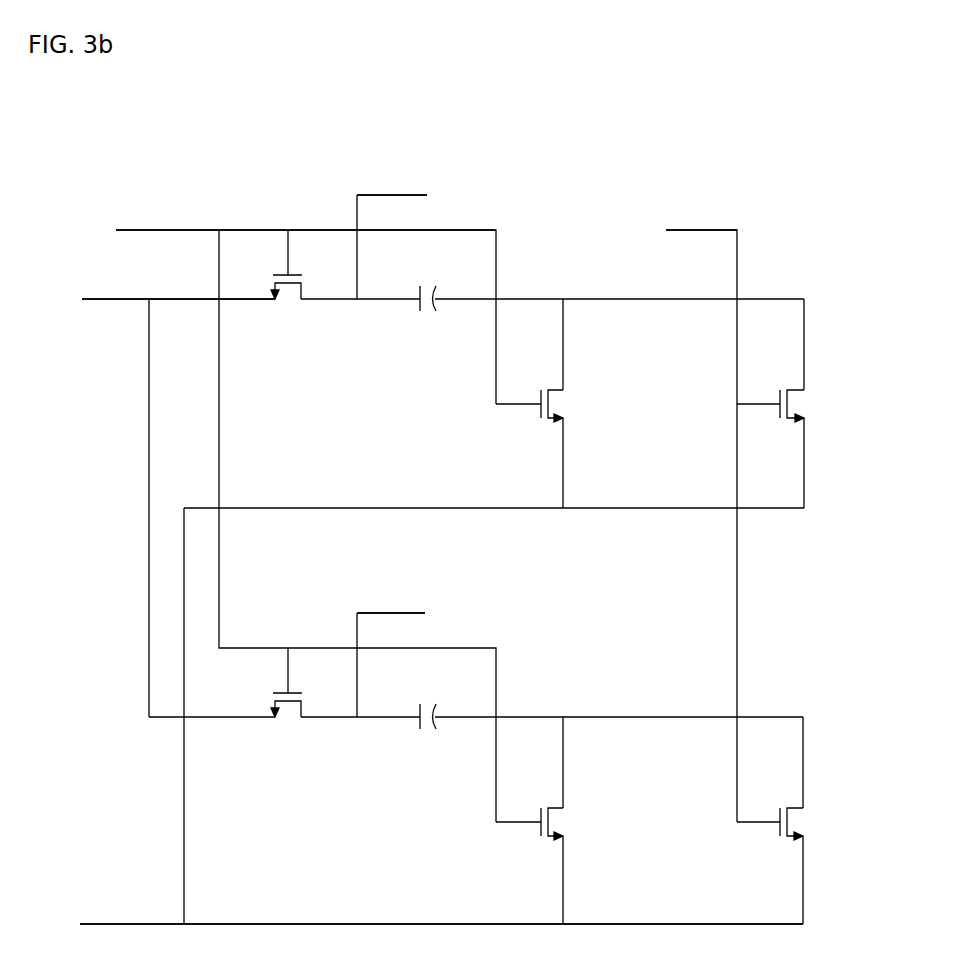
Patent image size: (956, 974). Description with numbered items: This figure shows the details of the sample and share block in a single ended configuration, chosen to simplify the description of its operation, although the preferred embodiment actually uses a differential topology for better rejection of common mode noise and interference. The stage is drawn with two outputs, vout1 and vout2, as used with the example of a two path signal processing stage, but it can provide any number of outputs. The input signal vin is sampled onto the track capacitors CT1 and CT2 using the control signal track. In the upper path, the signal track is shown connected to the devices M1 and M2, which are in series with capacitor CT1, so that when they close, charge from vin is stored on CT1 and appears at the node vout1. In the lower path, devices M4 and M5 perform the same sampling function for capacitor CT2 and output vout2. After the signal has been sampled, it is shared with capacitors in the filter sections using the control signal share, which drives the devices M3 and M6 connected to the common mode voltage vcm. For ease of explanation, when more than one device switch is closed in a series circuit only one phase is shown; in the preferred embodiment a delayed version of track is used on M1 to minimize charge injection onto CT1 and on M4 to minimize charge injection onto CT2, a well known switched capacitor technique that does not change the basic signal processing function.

The switch device M1 is at (288, 300).
The switch device M2 is at (565, 404).
The switch device M3 is at (806, 404).
The switch device M4 is at (288, 718).
The switch device M5 is at (565, 822).
The switch device M6 is at (805, 822).
The track capacitor CT1 is at (426, 318).
The track capacitor CT2 is at (426, 735).
The track control signal track is at (133, 229).
The input signal vin is at (99, 298).
The first output vout1 is at (409, 195).
The second output vout2 is at (408, 613).
The share control signal share is at (683, 229).
The common mode voltage vcm is at (98, 923).